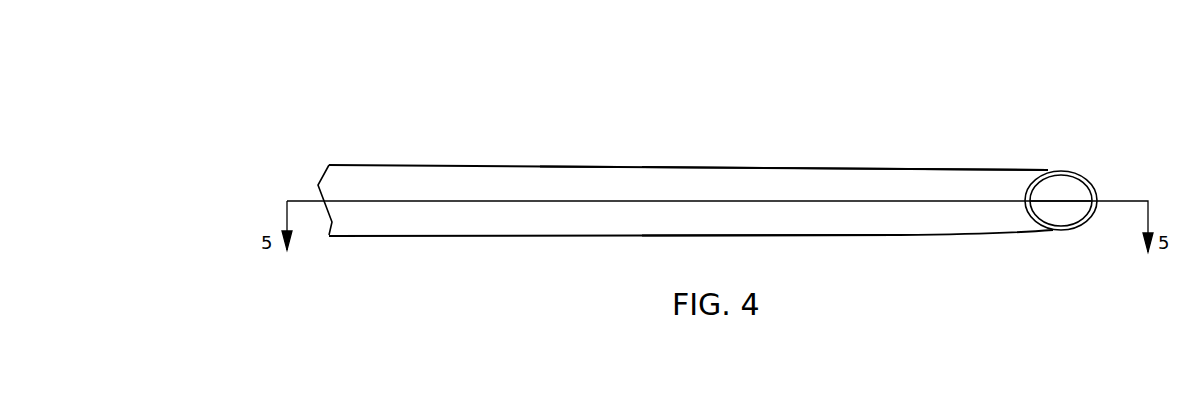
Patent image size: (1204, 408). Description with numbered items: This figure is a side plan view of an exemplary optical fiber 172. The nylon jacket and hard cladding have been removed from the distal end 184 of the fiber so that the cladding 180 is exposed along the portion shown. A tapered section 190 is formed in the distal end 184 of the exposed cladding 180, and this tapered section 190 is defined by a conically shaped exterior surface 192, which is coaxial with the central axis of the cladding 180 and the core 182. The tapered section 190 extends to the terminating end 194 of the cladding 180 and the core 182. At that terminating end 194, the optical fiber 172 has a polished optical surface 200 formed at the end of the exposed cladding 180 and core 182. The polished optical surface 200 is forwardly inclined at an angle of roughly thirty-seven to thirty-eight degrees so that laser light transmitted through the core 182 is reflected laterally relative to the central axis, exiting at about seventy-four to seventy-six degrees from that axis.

The optical fiber 172 is at (672, 162).
The cladding 180 is at (495, 166).
The distal end 184 is at (574, 166).
The tapered section 190 is at (1080, 163).
The conically shaped exterior surface 192 is at (897, 229).
The core 182 is at (1082, 193).
The terminating end 194 is at (1078, 212).
The polished optical surface 200 is at (1062, 217).